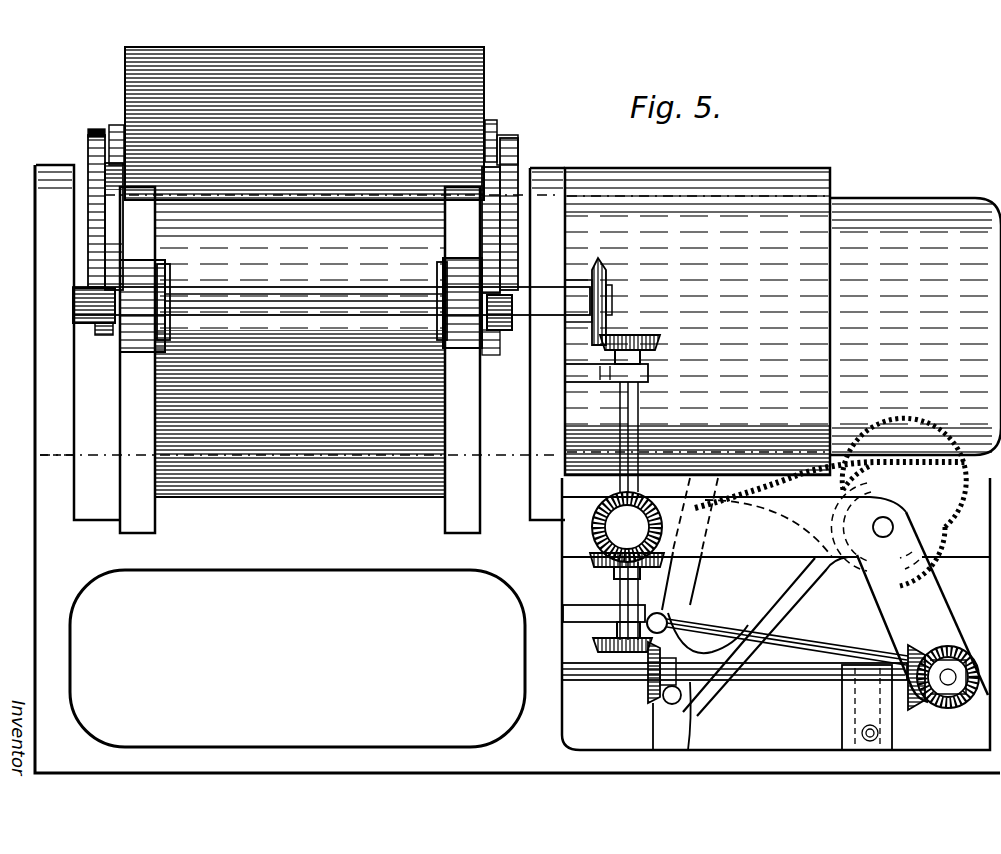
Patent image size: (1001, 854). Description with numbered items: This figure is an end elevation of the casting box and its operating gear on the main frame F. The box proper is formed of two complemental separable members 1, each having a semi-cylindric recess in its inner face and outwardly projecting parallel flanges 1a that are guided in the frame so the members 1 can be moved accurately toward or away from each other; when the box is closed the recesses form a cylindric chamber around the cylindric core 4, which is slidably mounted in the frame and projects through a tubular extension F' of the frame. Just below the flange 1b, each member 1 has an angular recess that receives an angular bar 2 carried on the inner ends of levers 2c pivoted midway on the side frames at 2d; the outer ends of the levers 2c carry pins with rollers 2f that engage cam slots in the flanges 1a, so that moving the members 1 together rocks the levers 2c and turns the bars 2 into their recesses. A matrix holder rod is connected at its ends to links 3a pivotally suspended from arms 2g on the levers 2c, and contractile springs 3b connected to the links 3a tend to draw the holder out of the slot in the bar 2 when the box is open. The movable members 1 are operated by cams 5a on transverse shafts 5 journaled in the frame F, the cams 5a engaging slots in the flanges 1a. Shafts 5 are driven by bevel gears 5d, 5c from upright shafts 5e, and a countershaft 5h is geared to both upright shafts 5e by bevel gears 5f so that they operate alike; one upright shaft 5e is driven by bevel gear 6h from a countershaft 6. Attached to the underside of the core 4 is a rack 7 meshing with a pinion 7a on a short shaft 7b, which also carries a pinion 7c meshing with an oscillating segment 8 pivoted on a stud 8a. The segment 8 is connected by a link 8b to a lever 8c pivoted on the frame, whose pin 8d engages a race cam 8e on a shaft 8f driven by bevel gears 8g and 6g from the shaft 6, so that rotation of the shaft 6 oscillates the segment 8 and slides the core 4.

The box member 1 is at (333, 489).
The flange 1a is at (497, 458).
The flange 1b is at (470, 73).
The bar 2 is at (114, 195).
The lever 2c is at (534, 345).
The pivot 2d is at (534, 318).
The roller 2f is at (137, 285).
The arm 2g is at (92, 140).
The link 3a is at (543, 136).
The contractile spring 3b is at (522, 120).
The core 4 is at (940, 235).
The transverse shaft 5 is at (78, 290).
The cam 5a is at (170, 280).
The bevel gear 5c is at (607, 280).
The bevel gear 5d is at (650, 337).
The upright shaft 5e is at (596, 541).
The bevel gear 5f is at (662, 538).
The countershaft 5h is at (594, 645).
The countershaft 6 is at (577, 681).
The bevel gear 6g is at (900, 650).
The bevel gear 6h is at (648, 695).
The rack 7 is at (960, 462).
The pinion 7a is at (938, 545).
The short shaft 7b is at (883, 530).
The pinion 7c is at (925, 517).
The oscillating segment 8 is at (790, 606).
The stud 8a is at (680, 700).
The link 8b is at (712, 634).
The lever 8c is at (845, 723).
The pin 8d is at (904, 652).
The race cam 8e is at (958, 606).
The shaft 8f is at (948, 685).
The bevel gear 8g is at (962, 655).
The frame F is at (506, 469).
The tubular extension F' is at (697, 309).